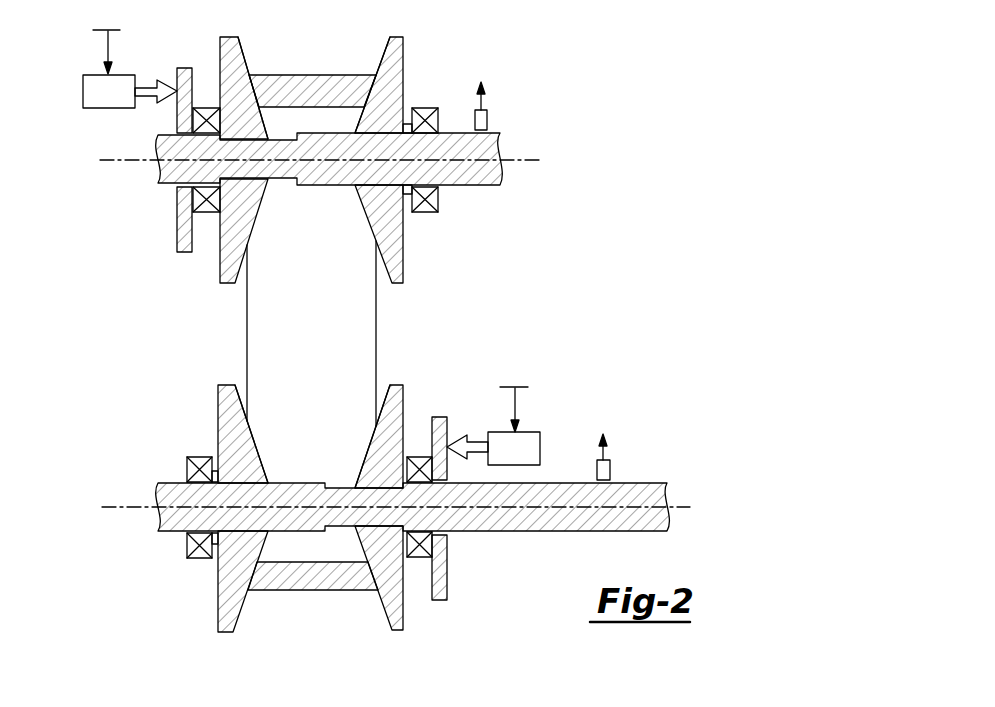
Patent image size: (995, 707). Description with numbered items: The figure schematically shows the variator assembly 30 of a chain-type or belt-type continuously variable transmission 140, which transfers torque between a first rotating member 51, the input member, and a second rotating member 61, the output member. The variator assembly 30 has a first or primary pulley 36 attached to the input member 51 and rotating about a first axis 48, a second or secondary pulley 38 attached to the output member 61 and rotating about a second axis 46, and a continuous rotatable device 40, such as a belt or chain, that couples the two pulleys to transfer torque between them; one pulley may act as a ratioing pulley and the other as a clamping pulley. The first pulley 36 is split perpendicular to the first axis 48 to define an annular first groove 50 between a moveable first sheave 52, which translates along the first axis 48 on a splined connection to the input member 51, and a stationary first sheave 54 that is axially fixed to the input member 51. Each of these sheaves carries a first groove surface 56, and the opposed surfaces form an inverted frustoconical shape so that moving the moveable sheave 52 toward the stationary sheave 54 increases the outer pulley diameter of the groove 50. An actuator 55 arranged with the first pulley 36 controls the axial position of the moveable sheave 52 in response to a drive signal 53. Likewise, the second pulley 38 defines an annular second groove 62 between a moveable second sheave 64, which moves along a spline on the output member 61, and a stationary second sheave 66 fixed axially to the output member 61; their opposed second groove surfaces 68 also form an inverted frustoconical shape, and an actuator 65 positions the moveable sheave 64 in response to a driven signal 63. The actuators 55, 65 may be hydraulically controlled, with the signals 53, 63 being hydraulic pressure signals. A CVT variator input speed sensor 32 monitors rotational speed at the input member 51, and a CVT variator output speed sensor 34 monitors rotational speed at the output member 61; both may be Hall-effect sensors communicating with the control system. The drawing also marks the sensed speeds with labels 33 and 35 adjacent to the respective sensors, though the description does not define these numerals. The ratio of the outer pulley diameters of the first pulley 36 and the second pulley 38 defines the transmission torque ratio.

The variator assembly 30 is at (309, 495).
The CVT variator input speed sensor 32 is at (488, 120).
The first rotational speed 33 is at (465, 117).
The CVT variator output speed sensor 34 is at (612, 470).
The second rotational speed 35 is at (582, 471).
The first pulley 36 is at (321, 144).
The second pulley 38 is at (322, 495).
The continuous rotatable device 40 is at (377, 317).
The second axis 46 is at (122, 510).
The first axis 48 is at (116, 163).
The annular first groove 50 is at (305, 75).
The first rotating member 51 is at (477, 187).
The moveable first sheave 52 is at (220, 50).
The drive signal 53 is at (107, 40).
The stationary first sheave 54 is at (406, 52).
The actuator 55 is at (83, 92).
The first groove surface 56 is at (244, 57).
The second rotating member 61 is at (540, 533).
The annular second groove 62 is at (308, 592).
The driven signal 63 is at (514, 398).
The moveable second sheave 64 is at (406, 393).
The actuator 65 is at (537, 432).
The stationary second sheave 66 is at (218, 430).
The second groove surface 68 is at (243, 388).
The continuously variable transmission 140 is at (396, 495).